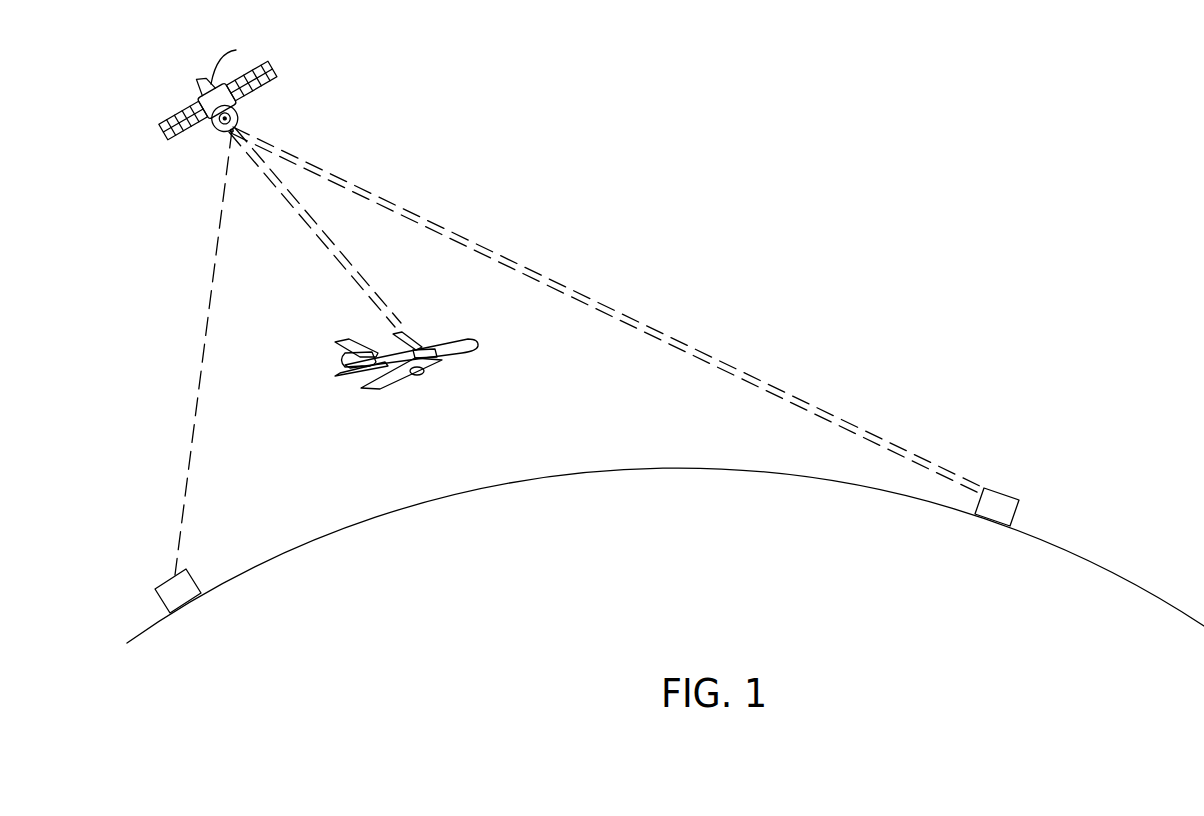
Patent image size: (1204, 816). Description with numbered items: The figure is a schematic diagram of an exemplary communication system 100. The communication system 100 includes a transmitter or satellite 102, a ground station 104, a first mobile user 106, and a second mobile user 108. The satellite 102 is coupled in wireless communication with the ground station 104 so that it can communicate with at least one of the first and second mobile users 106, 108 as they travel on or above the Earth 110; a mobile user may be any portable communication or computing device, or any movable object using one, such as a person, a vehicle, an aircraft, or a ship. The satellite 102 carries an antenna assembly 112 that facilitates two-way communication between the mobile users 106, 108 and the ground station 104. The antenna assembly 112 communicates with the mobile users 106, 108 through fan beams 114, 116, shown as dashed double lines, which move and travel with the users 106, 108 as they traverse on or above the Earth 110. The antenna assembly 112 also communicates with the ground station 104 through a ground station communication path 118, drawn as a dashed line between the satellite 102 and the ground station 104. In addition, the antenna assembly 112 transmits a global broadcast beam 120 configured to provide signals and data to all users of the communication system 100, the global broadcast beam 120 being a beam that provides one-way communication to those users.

The communication system 100 is at (1025, 138).
The satellite 102 is at (200, 84).
The ground station 104 is at (195, 573).
The first mobile user 106 is at (462, 356).
The second mobile user 108 is at (1018, 510).
The Earth 110 is at (705, 584).
The antenna assembly 112 is at (246, 58).
The fan beam 114 is at (347, 270).
The fan beam 116 is at (752, 387).
The ground station communication path 118 is at (197, 432).
The global broadcast beam 120 is at (607, 311).